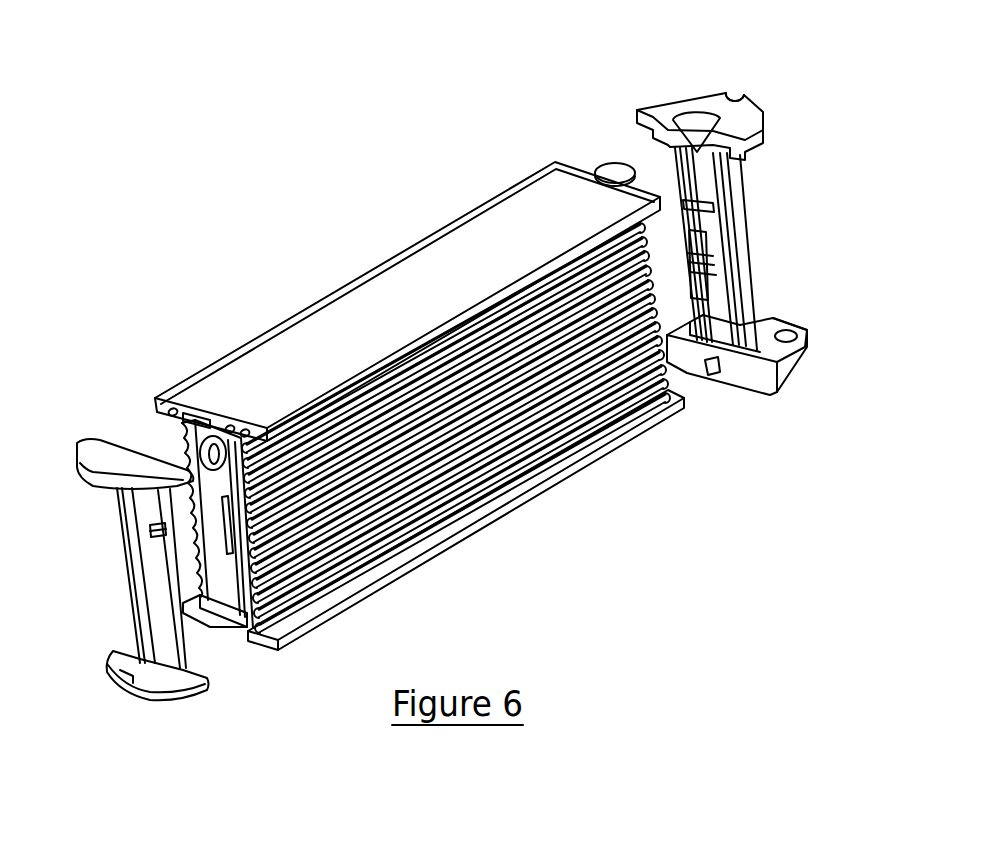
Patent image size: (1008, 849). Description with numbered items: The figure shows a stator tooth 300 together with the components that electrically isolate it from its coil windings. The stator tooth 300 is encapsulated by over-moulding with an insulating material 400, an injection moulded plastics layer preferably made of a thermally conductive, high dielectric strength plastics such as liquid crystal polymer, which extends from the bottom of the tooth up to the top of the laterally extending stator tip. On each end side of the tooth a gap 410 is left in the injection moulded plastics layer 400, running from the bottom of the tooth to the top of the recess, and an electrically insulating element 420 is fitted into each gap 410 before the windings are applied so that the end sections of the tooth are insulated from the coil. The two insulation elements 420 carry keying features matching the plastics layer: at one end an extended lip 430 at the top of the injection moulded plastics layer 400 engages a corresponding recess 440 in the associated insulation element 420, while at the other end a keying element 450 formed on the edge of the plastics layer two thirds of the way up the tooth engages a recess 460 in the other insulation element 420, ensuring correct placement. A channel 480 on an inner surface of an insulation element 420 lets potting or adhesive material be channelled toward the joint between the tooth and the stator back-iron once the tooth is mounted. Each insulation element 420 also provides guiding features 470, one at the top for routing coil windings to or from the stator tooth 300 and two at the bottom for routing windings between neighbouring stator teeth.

The stator tooth 300 is at (375, 307).
The insulating material 400 is at (470, 500).
The gap 410 is at (238, 641).
The electrically insulating element 420 is at (95, 442).
The extended lip 430 is at (612, 170).
The recess 440 is at (692, 130).
The keying element 450 is at (213, 438).
The recess 460 is at (152, 532).
The guiding feature 470 is at (731, 100).
The channel 480 is at (713, 372).